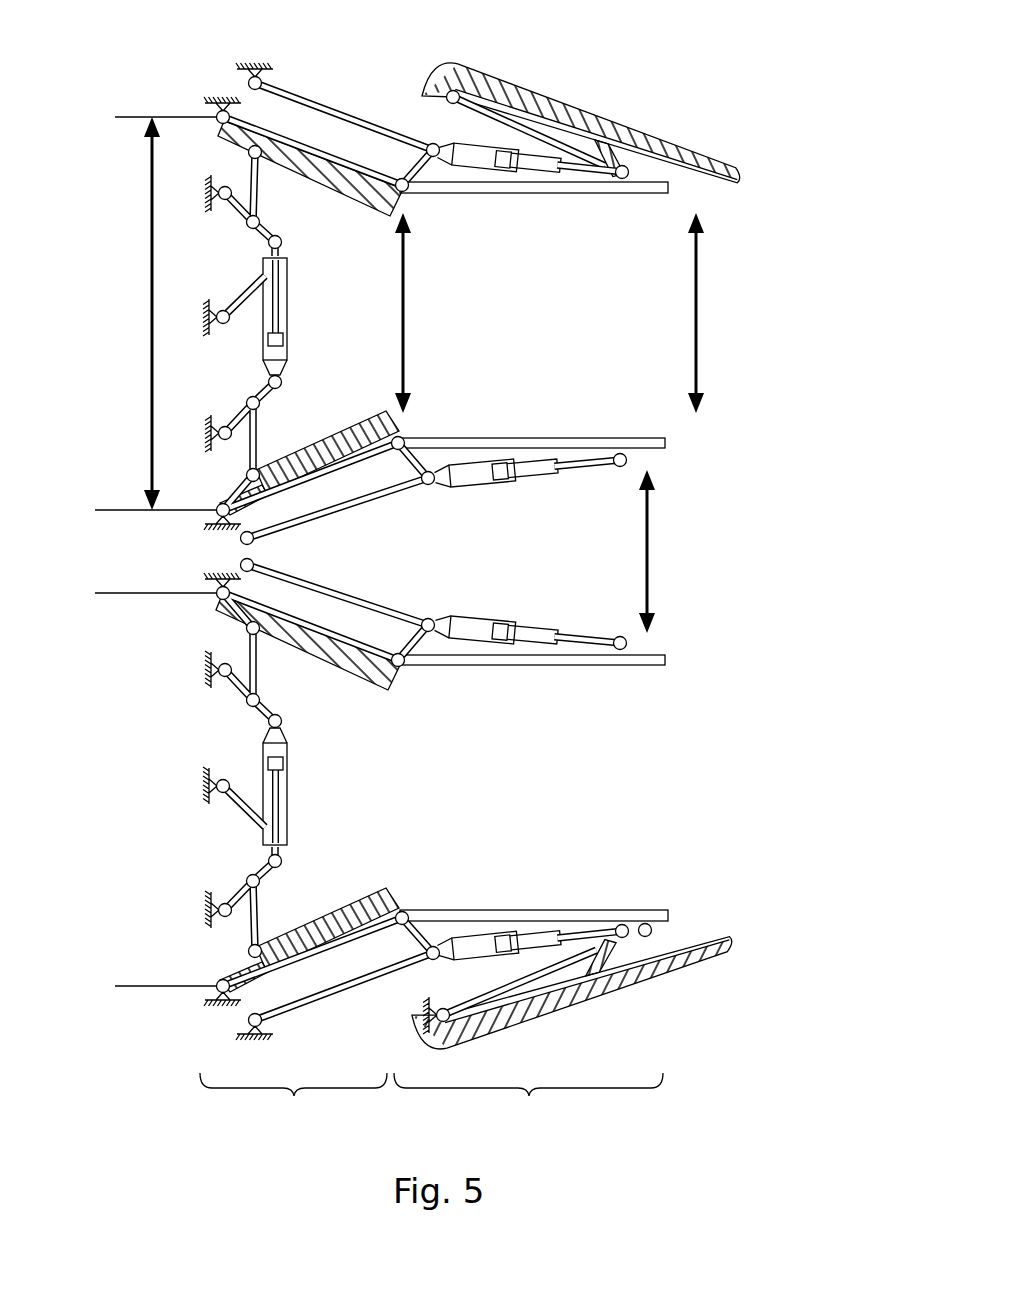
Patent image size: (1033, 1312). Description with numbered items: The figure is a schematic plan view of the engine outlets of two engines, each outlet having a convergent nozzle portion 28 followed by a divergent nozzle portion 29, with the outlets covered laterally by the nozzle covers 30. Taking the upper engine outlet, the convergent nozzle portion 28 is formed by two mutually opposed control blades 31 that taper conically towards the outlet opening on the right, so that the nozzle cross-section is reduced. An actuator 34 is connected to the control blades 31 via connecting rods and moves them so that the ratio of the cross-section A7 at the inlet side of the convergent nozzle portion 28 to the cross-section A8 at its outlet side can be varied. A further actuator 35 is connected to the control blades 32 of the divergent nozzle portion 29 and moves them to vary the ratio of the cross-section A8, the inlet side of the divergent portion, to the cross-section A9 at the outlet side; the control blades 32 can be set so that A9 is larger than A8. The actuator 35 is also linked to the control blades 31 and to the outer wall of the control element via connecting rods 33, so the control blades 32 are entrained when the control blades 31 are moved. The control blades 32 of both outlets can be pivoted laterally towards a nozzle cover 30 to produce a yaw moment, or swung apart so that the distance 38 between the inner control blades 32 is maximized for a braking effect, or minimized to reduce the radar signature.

The convergent nozzle portion 28 is at (293, 1103).
The divergent nozzle portion 29 is at (528, 1103).
The nozzle cover 30 is at (648, 135).
The control blade 31 is at (317, 150).
The control blade 32 is at (528, 194).
The connecting rod 33 is at (370, 122).
The actuator 34 is at (264, 340).
The actuator 35 is at (510, 150).
The distance 38 is at (648, 535).
The cross-section A7 is at (128, 313).
The cross-section A8 is at (382, 313).
The cross-section A9 is at (675, 313).